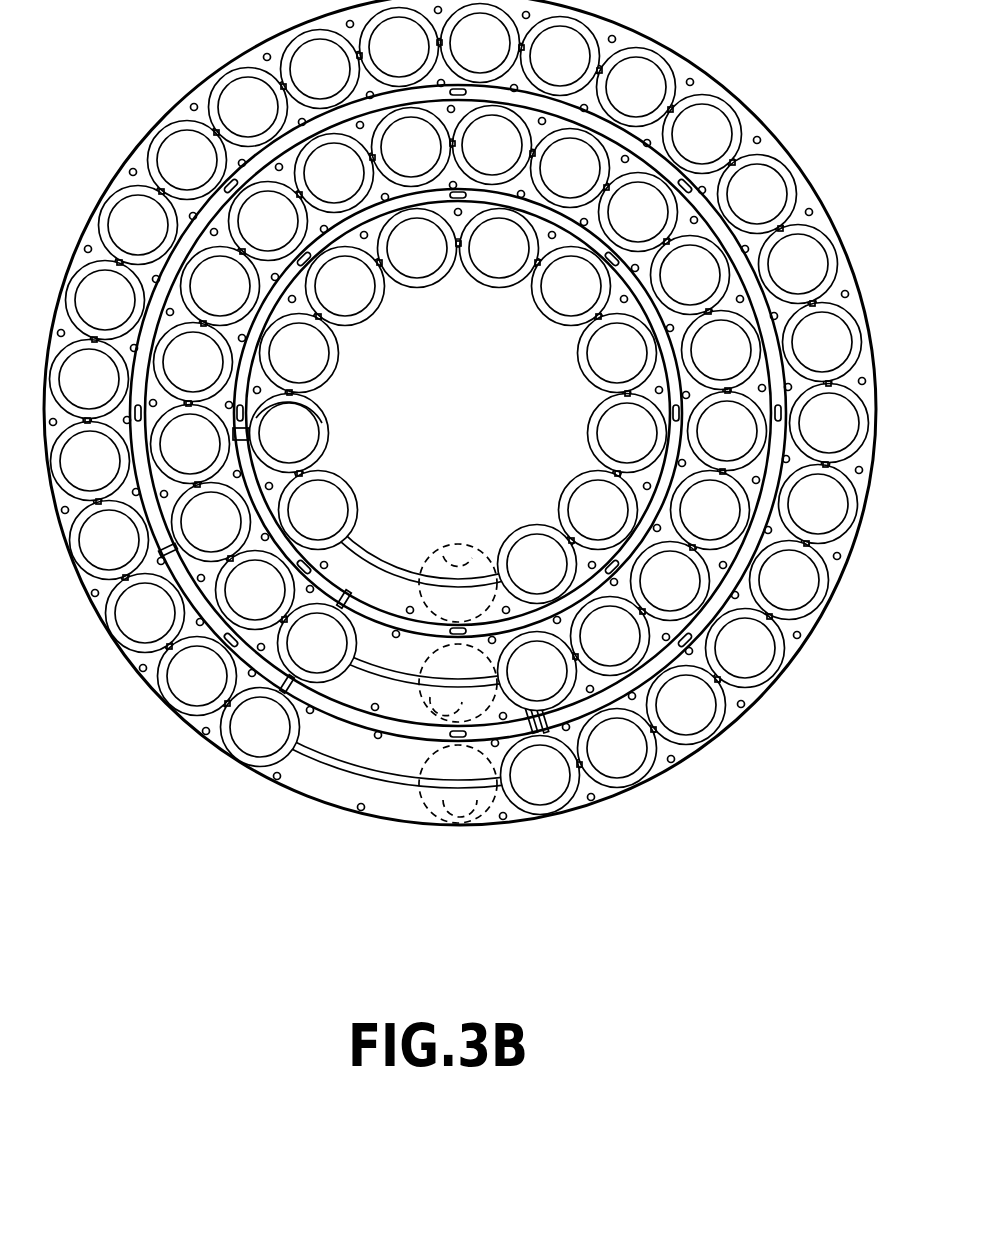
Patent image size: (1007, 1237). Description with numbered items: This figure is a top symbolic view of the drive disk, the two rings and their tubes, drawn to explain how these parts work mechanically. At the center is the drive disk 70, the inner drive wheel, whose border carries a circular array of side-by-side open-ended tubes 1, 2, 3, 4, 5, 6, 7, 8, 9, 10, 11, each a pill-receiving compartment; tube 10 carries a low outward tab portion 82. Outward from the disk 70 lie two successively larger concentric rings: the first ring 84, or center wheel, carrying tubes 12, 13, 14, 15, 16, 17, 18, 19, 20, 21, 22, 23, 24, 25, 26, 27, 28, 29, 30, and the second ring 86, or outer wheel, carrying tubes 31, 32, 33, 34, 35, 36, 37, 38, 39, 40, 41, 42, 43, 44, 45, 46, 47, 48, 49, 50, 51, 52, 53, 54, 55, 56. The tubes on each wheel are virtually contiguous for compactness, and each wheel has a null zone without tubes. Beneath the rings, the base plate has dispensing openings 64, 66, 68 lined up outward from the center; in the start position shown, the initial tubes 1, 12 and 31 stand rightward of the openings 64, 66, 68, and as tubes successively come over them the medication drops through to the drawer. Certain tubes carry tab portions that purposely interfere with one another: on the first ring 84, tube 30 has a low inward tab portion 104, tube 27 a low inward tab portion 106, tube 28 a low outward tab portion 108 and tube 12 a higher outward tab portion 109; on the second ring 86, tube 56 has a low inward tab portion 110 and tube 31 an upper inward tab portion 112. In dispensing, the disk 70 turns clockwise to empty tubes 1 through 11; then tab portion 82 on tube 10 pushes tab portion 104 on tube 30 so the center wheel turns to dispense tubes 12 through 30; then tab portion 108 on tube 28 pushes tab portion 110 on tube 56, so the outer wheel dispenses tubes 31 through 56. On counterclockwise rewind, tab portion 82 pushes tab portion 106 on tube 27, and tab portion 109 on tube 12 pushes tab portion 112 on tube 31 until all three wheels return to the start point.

The tube 1 is at (537, 564).
The tube 2 is at (598, 510).
The tube 3 is at (627, 433).
The tube 4 is at (617, 353).
The tube 5 is at (571, 286).
The tube 6 is at (499, 248).
The tube 7 is at (417, 248).
The tube 8 is at (345, 286).
The tube 9 is at (299, 353).
The tube 10 is at (289, 433).
The tube 11 is at (318, 510).
The tube 12 is at (537, 671).
The tube 13 is at (610, 636).
The tube 14 is at (670, 581).
The tube 15 is at (710, 510).
The tube 16 is at (727, 431).
The tube 17 is at (721, 350).
The tube 18 is at (690, 275).
The tube 19 is at (638, 212).
The tube 20 is at (570, 168).
The tube 21 is at (492, 145).
The tube 22 is at (411, 147).
The tube 23 is at (334, 173).
The tube 24 is at (268, 221).
The tube 25 is at (220, 286).
The tube 26 is at (193, 362).
The tube 27 is at (190, 444).
The tube 28 is at (211, 522).
The tube 29 is at (255, 590).
The tube 30 is at (317, 643).
The tube 31 is at (540, 775).
The tube 32 is at (617, 748).
The tube 33 is at (686, 705).
The tube 34 is at (745, 648).
The tube 35 is at (789, 580).
The tube 36 is at (818, 504).
The tube 37 is at (829, 423).
The tube 38 is at (822, 342).
The tube 39 is at (798, 264).
The tube 40 is at (757, 194).
The tube 41 is at (702, 134).
The tube 42 is at (636, 87).
The tube 43 is at (560, 56).
The tube 44 is at (480, 43).
The tube 45 is at (399, 47).
The tube 46 is at (320, 69).
The tube 47 is at (248, 107).
The tube 48 is at (187, 160).
The tube 49 is at (138, 225).
The tube 50 is at (105, 300).
The tube 51 is at (89, 379).
The tube 52 is at (90, 461).
The tube 53 is at (109, 540).
The tube 54 is at (145, 613).
The tube 55 is at (197, 676).
The tube 56 is at (260, 727).
The dispensing opening 64 is at (466, 554).
The dispensing opening 66 is at (430, 699).
The dispensing opening 68 is at (477, 811).
The drive disk 70 is at (470, 416).
The outward tab portion 82 is at (303, 399).
The first ring 84 is at (745, 310).
The second ring 86 is at (750, 134).
The inward tab portion 104 is at (363, 598).
The inward tab portion 106 is at (318, 448).
The outward tab portion 108 is at (166, 553).
The outward tab portion 109 is at (490, 798).
The inward tab portion 110 is at (330, 701).
The inward tab portion 112 is at (557, 728).